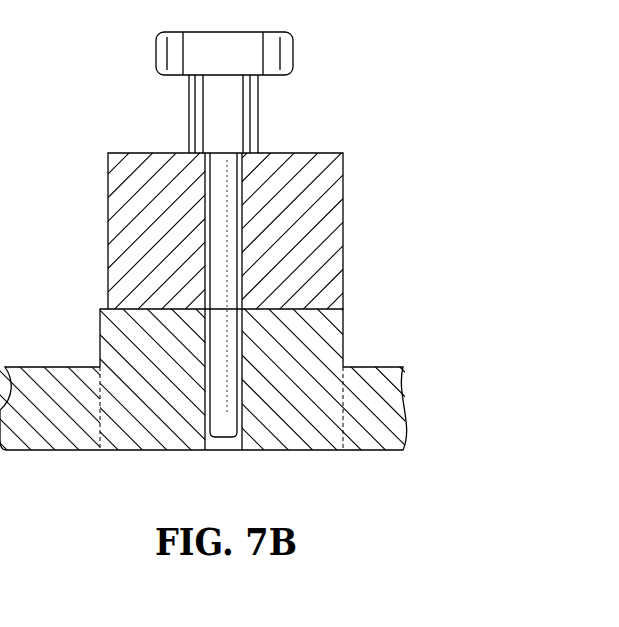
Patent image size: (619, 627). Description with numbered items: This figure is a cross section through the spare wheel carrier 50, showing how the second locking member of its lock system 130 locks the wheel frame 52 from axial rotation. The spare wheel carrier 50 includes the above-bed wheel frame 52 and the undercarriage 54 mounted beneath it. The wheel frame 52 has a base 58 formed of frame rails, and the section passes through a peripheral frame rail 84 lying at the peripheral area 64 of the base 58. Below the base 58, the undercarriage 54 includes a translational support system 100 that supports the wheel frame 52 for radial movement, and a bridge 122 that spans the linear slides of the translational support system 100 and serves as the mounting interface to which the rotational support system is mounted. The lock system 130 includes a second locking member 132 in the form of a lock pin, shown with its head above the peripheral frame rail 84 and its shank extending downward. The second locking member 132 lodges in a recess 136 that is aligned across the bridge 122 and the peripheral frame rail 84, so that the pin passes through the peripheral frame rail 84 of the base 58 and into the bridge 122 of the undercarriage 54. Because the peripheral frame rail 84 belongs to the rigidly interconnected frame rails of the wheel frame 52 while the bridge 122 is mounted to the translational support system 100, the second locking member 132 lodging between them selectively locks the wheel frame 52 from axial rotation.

The spare wheel carrier 50 is at (82, 456).
The wheel frame 52 is at (243, 228).
The undercarriage 54 is at (246, 371).
The base 58 is at (243, 228).
The peripheral area 64 is at (243, 228).
The peripheral frame rail 84 is at (343, 228).
The translational support system 100 is at (246, 371).
The bridge 122 is at (343, 337).
The lock system 130 is at (297, 58).
The second locking member 132 is at (258, 112).
The recess 136 is at (237, 375).